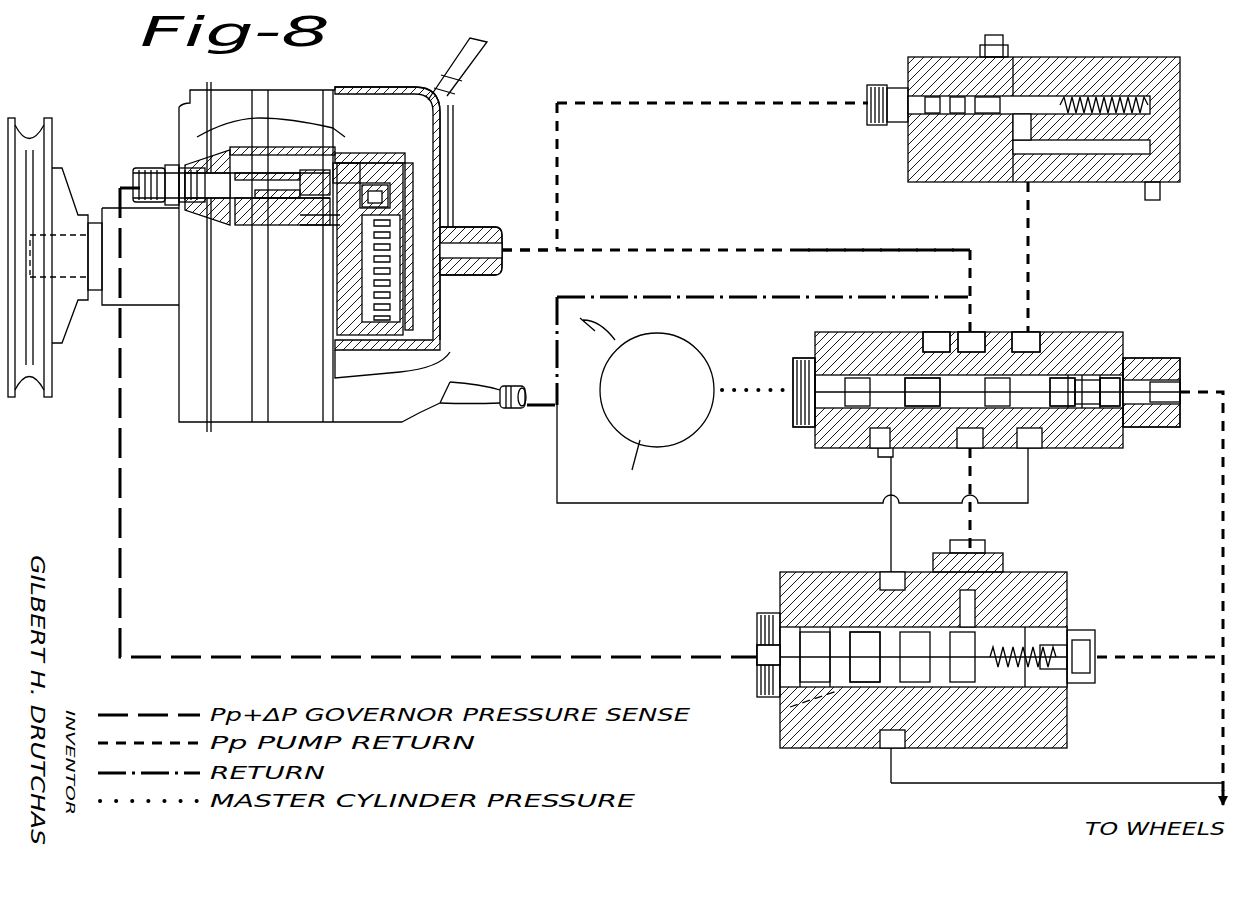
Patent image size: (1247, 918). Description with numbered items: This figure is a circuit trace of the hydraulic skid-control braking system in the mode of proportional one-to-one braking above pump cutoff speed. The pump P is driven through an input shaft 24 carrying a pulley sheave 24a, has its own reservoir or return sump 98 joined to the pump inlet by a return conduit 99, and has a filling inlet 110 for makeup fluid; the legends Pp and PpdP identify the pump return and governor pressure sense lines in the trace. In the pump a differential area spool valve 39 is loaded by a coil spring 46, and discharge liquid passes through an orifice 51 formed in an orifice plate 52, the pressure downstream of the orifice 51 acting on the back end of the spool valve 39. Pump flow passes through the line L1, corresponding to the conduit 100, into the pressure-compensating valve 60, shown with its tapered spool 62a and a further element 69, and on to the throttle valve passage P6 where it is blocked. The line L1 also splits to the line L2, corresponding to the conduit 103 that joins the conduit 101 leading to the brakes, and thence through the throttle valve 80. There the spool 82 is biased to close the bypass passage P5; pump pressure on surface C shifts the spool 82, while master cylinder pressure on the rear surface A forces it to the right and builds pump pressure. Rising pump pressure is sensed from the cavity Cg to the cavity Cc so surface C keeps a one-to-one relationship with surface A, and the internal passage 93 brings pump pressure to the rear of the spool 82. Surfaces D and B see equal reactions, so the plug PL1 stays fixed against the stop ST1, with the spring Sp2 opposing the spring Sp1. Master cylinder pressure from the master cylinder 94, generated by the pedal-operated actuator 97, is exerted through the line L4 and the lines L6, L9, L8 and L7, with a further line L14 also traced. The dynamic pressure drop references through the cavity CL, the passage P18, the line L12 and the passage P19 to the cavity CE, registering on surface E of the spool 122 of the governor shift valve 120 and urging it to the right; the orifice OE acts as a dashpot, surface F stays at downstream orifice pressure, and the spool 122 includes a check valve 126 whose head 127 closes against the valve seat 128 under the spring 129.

The pulley sheave 24a is at (47, 148).
The input shaft 24 is at (97, 240).
The pump P is at (282, 432).
The passage P18 is at (278, 185).
The cavity CL is at (338, 215).
The spool valve 39 is at (372, 200).
The coil spring 46 is at (378, 300).
The orifice 51 is at (385, 190).
The orifice plate 52 is at (360, 180).
The pump return port Pp is at (462, 245).
The filling inlet 110 is at (472, 63).
The reservoir 98 is at (392, 365).
The pressure-compensating valve 60 is at (928, 57).
The tapered spool 62a is at (948, 95).
The governor valve spring 69 is at (1085, 100).
The throttle valve 80 is at (832, 450).
The throttle valve spool 82 is at (958, 396).
The internal passage 93 is at (1052, 425).
The cavity Cc is at (1085, 415).
The stop ST1 is at (1098, 420).
The plug PL1 is at (1175, 418).
The spring Sp2 is at (1160, 378).
The spring Sp1 is at (793, 412).
The bypass passage P5 is at (940, 345).
The cavity Cg is at (978, 352).
The throttle valve passage P6 is at (1022, 350).
The pedal-operated actuator 97 is at (608, 338).
The master cylinder 94 is at (644, 458).
The line L4 is at (746, 385).
The line L12 is at (122, 497).
The line L1 is at (560, 196).
The conduit 100 is at (655, 102).
The line L2 is at (703, 248).
The conduit 101 is at (517, 246).
The conduit 103 is at (793, 247).
The return conduit 99 is at (722, 296).
The line L6 is at (888, 525).
The line 14 L14 is at (1222, 478).
The line L7 is at (1162, 652).
The line L8 is at (1222, 700).
The line L9 is at (1085, 782).
The governor shift valve 120 is at (757, 688).
The valve seat 128 is at (1060, 585).
The check valve 126 is at (1060, 610).
The spring 129 is at (1055, 628).
The head 127 is at (1000, 690).
The spool 122 is at (875, 682).
The cavity CE is at (787, 627).
The passage P19 is at (778, 645).
The orifice OE is at (790, 707).
The governor pressure Pp plus delta P PpdP is at (122, 560).